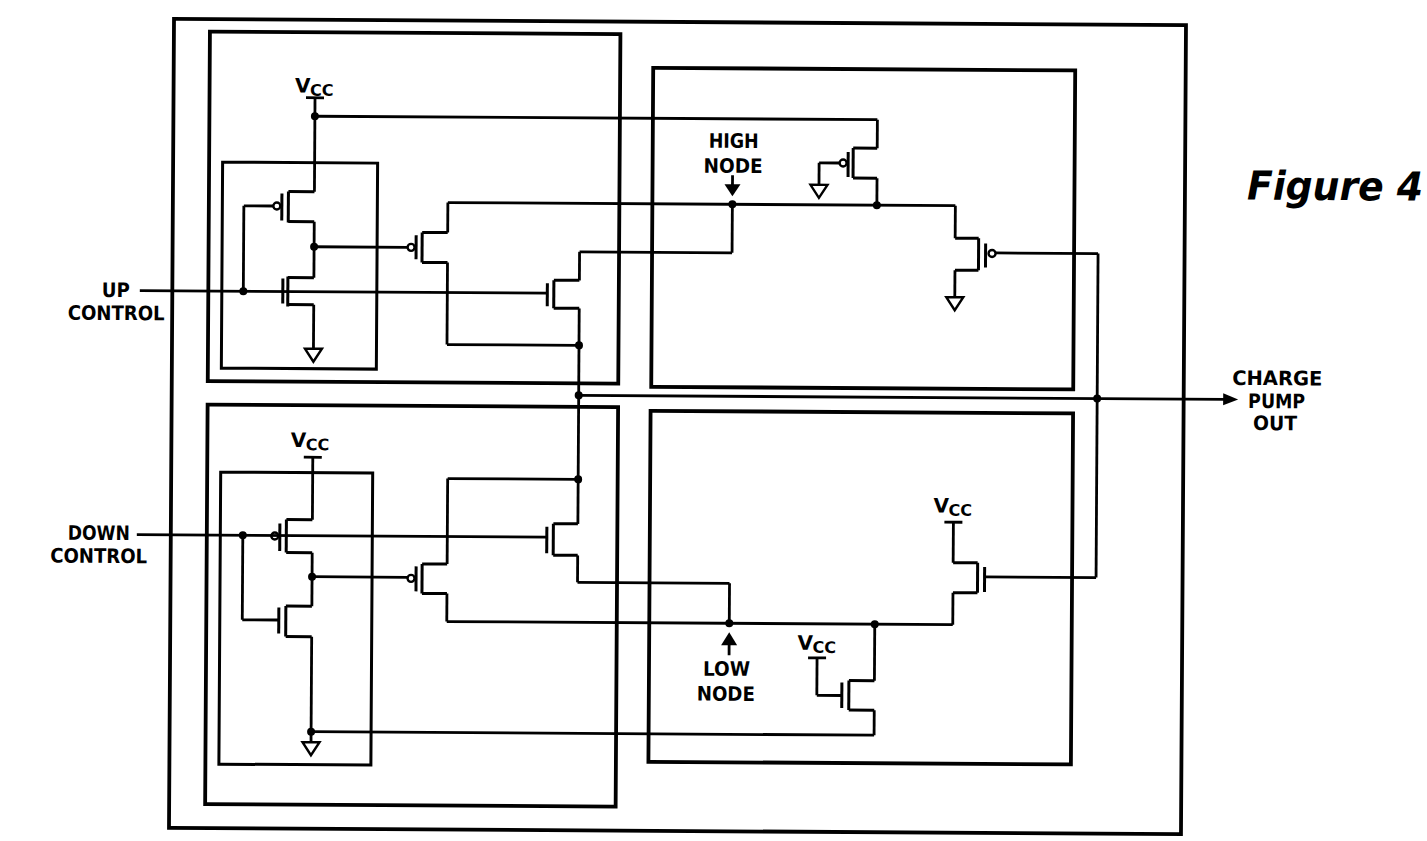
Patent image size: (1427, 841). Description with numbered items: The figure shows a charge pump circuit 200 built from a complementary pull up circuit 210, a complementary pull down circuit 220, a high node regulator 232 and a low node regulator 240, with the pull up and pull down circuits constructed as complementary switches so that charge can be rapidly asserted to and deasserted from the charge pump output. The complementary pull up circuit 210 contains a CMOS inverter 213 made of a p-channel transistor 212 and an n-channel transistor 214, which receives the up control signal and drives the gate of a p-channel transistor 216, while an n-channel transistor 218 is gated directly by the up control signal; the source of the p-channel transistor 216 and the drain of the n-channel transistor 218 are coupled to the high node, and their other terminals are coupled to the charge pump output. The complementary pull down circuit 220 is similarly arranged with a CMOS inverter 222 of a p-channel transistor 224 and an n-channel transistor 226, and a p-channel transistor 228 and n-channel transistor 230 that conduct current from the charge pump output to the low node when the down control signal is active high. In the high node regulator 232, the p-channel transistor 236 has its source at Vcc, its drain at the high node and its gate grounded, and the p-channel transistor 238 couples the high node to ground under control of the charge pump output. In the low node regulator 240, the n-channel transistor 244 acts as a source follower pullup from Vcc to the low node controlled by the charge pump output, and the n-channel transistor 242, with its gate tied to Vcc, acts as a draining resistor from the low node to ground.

The charge pump circuit 200 is at (677, 426).
The complementary pull up circuit 210 is at (414, 208).
The p-channel transistor 212 is at (305, 209).
The CMOS inverter 213 is at (379, 177).
The n-channel transistor 214 is at (305, 284).
The p-channel transistor 216 is at (440, 248).
The n-channel transistor 218 is at (563, 296).
The complementary pull down circuit 220 is at (411, 606).
The CMOS inverter 222 is at (378, 496).
The p-channel transistor 224 is at (305, 529).
The n-channel transistor 226 is at (305, 622).
The p-channel transistor 228 is at (440, 580).
The n-channel transistor 230 is at (563, 540).
The high node regulator 232 is at (863, 229).
The p-channel transistor 236 is at (870, 160).
The p-channel transistor 238 is at (966, 252).
The low node regulator 240 is at (860, 588).
The n-channel transistor 242 is at (871, 694).
The n-channel transistor 244 is at (967, 578).